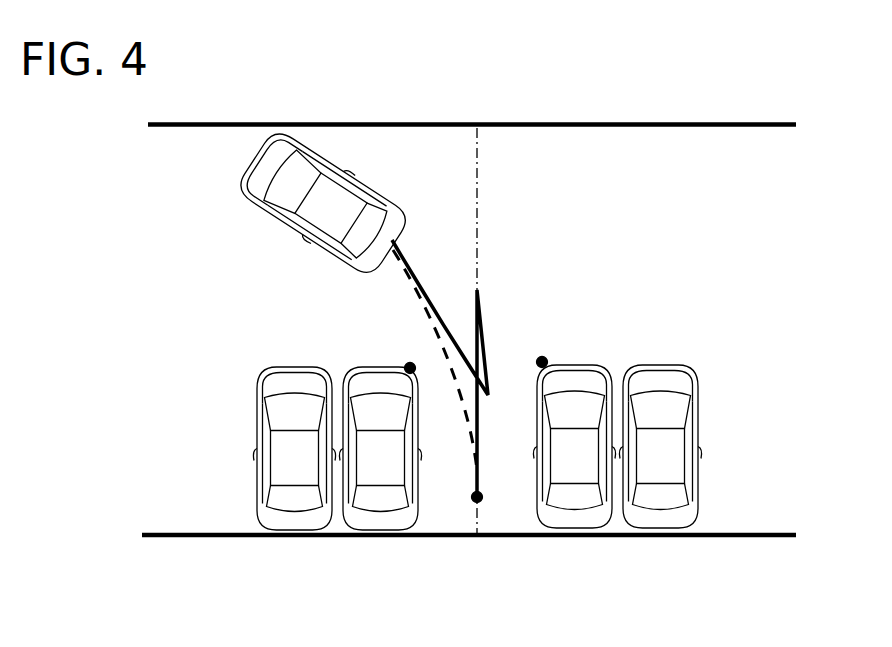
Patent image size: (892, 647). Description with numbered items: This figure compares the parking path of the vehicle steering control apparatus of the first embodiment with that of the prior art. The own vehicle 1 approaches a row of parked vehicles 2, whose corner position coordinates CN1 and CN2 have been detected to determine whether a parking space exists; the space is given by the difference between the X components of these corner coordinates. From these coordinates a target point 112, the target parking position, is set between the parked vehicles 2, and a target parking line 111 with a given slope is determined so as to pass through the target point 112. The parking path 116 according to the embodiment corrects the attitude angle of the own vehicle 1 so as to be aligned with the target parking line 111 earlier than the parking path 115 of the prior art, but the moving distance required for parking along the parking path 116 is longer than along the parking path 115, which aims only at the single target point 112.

The own vehicle 1 is at (245, 207).
The parked vehicles 2 is at (372, 537).
The target parking line 111 is at (478, 212).
The target point 112 is at (479, 504).
The parking path 115 is at (410, 273).
The parking path 116 is at (433, 288).
The corner position coordinates CN1 is at (545, 347).
The corner position coordinates CN2 is at (397, 350).